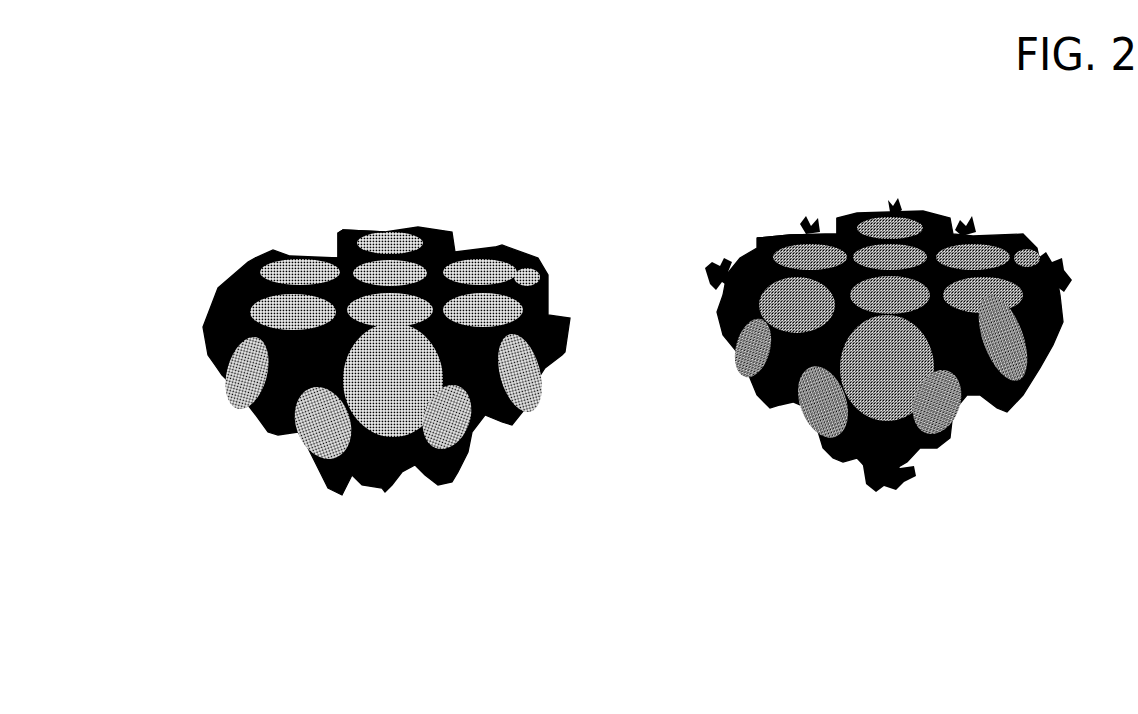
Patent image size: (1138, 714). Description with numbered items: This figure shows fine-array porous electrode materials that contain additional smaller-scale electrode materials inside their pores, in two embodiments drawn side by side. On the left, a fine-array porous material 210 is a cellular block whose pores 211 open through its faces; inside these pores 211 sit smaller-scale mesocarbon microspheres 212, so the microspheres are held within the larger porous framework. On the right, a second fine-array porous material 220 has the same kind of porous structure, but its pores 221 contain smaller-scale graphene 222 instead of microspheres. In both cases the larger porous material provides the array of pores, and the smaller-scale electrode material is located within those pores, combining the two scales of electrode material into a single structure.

The fine-array porous material 210 is at (386, 406).
The pores 211 is at (310, 242).
The mesocarbon microspheres 212 is at (455, 273).
The fine-array porous material 220 is at (888, 381).
The pores 221 is at (805, 220).
The graphene 222 is at (973, 230).